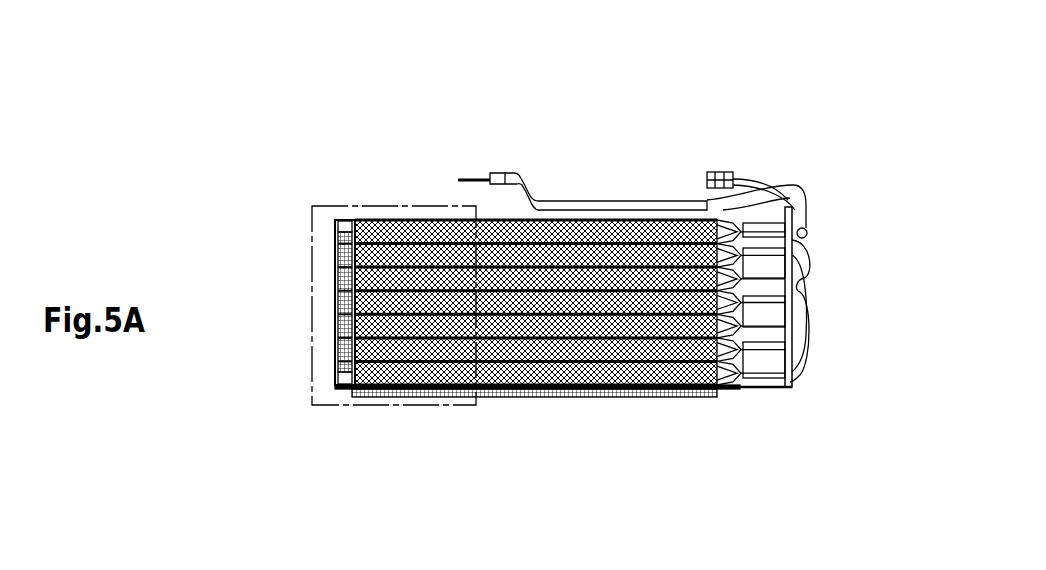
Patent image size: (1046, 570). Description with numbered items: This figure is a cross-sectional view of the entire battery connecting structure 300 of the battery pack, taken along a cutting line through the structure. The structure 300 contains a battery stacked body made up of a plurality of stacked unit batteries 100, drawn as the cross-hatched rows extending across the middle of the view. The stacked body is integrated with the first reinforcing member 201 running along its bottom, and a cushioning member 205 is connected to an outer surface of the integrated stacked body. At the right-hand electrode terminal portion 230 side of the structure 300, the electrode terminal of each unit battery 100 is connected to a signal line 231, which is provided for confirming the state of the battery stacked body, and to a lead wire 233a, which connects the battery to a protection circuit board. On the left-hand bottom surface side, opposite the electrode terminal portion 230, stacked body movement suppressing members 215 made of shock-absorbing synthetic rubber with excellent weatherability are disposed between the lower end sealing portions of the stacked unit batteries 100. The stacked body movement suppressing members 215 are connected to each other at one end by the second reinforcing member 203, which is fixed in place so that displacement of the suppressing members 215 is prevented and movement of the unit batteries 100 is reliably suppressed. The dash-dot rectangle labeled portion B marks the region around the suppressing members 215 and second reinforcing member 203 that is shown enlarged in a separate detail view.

The battery connecting structure 300 is at (302, 69).
The unit battery 100 is at (385, 221).
The second reinforcing member 203 is at (337, 240).
The stacked body movement suppressing member 215 is at (340, 357).
The cushioning member 205 is at (600, 398).
The first reinforcing member 201 is at (665, 398).
The lead wire 233a is at (568, 203).
The signal line 231 is at (717, 172).
The electrode terminal portion 230 is at (822, 280).
The portion B is at (300, 294).